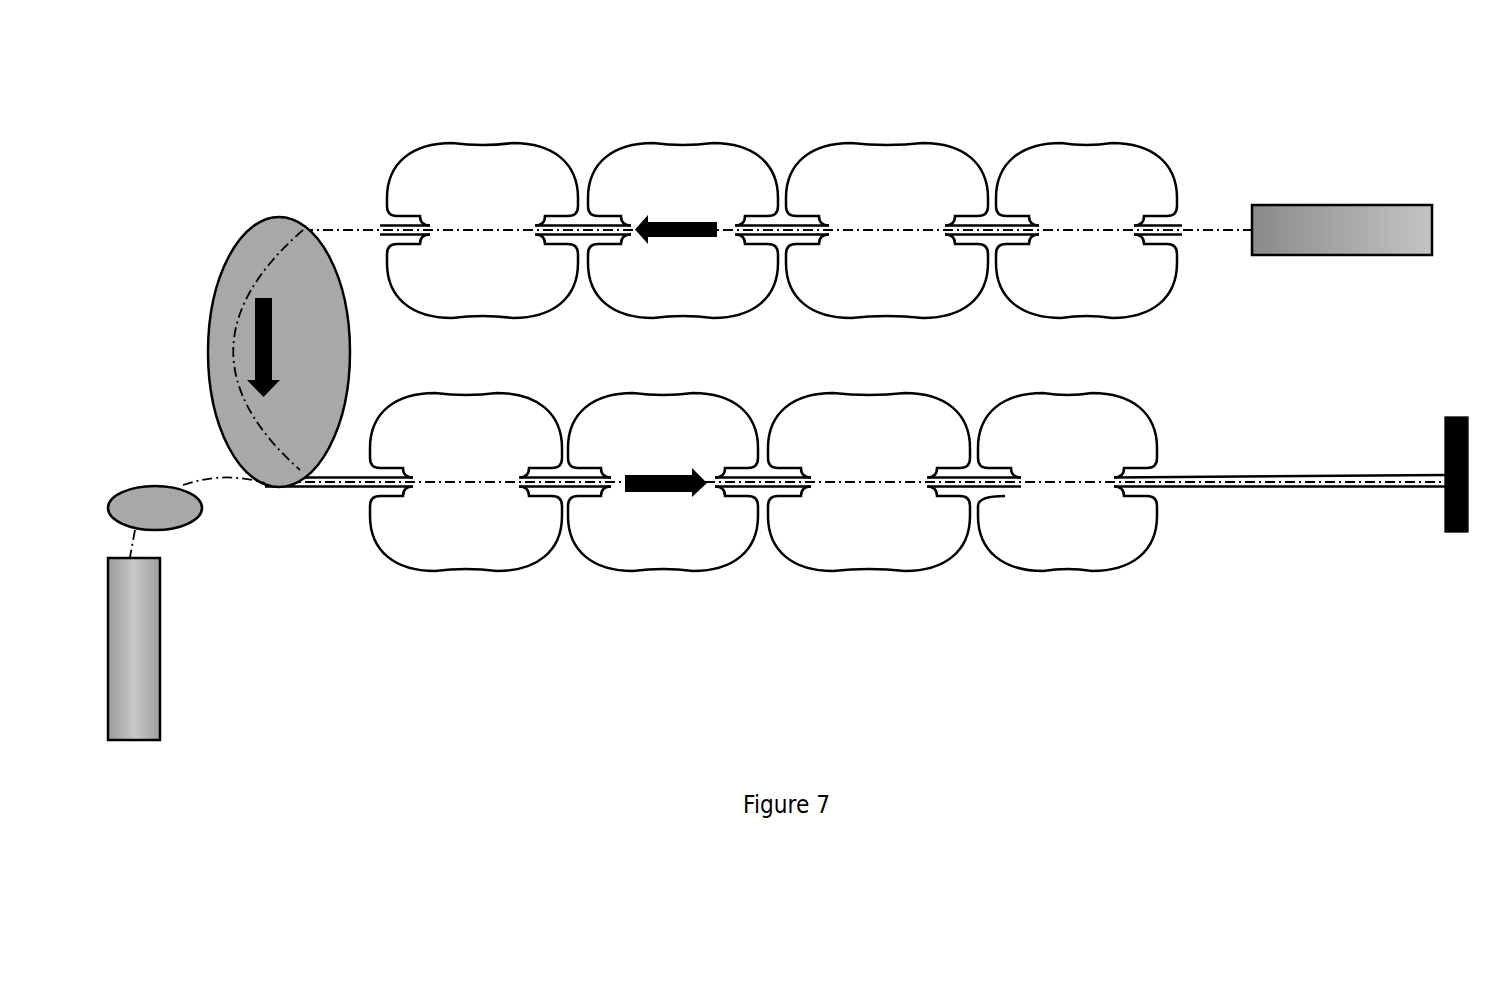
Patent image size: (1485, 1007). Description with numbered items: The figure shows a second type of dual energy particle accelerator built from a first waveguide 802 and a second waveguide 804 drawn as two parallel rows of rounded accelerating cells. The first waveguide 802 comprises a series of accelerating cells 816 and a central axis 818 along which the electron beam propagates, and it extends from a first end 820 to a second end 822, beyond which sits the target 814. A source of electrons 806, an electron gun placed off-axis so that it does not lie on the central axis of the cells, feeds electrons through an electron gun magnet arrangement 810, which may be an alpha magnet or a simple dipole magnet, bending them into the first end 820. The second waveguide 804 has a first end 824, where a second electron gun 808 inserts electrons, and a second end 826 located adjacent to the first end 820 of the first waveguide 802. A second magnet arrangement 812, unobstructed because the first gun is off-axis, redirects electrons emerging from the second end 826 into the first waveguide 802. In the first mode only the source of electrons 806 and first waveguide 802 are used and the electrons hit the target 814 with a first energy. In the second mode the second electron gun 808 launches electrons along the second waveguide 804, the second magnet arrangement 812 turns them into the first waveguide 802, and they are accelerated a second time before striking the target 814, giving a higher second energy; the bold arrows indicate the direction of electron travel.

The first waveguide 802 is at (855, 568).
The second waveguide 804 is at (823, 181).
The source of electrons 806 is at (170, 647).
The second electron gun 808 is at (1330, 195).
The electron gun magnet arrangement 810 is at (155, 487).
The second magnet arrangement 812 is at (263, 213).
The target 814 is at (1412, 422).
The accelerating cells 816 is at (958, 562).
The central axis 818 is at (1090, 493).
The first end 820 is at (405, 508).
The second end 822 is at (1127, 493).
The first end 824 is at (1177, 238).
The second end 826 is at (405, 208).